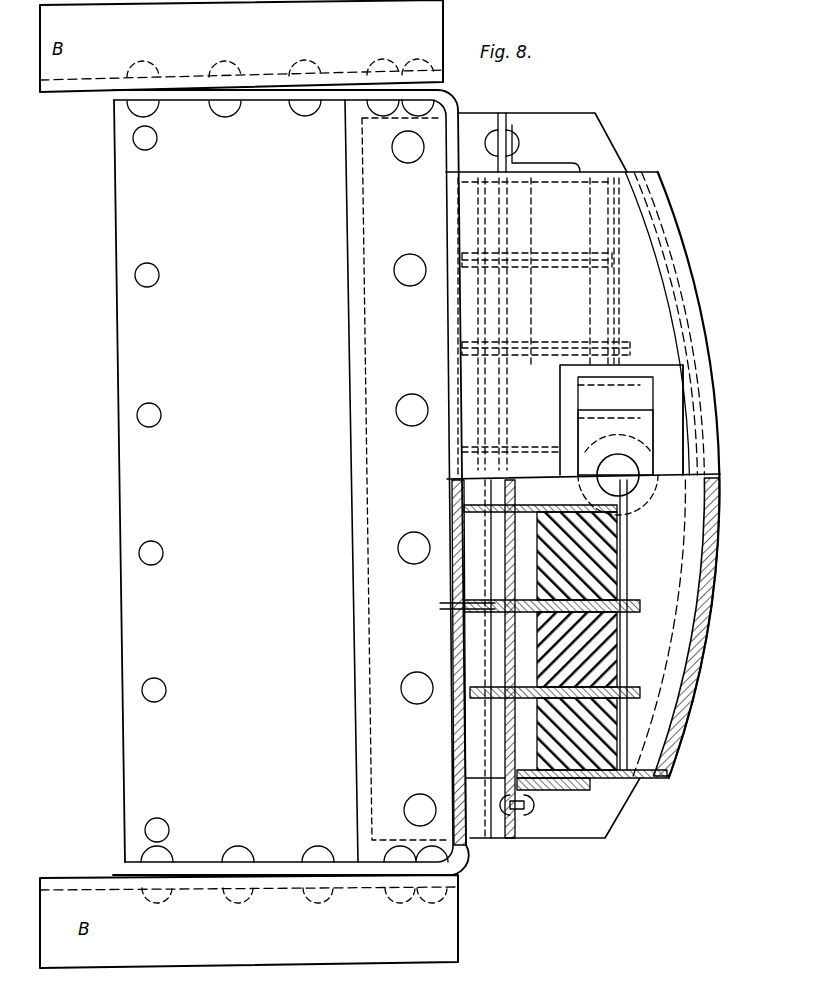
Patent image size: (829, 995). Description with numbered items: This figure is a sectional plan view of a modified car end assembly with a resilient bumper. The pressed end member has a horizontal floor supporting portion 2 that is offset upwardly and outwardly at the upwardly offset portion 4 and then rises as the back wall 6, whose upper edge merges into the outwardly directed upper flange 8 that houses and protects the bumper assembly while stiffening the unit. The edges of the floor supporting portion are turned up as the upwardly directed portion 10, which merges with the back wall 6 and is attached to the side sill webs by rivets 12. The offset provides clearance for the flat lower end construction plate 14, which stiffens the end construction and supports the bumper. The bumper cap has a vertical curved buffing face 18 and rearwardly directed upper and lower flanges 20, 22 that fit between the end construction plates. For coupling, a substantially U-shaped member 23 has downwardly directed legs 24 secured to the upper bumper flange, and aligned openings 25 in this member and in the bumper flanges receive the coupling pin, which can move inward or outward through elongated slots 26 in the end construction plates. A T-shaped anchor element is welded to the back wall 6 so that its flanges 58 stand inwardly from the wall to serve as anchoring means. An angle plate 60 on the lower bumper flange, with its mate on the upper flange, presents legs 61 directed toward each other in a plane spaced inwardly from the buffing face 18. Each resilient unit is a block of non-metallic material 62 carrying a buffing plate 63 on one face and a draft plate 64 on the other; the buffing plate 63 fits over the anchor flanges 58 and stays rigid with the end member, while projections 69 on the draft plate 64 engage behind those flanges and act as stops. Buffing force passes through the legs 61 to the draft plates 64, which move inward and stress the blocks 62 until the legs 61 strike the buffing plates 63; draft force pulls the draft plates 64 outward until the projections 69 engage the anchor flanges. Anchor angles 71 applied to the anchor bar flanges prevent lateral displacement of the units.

The horizontal floor supporting portion 2 is at (167, 481).
The upwardly offset portion 4 is at (378, 468).
The back wall 6 is at (455, 503).
The upper flange 8 is at (652, 303).
The upwardly directed portion 10 is at (274, 96).
The rivets 12 is at (214, 113).
The lower end construction plate 14 is at (597, 138).
The buffing face 18 is at (722, 513).
The upper flange 20 is at (678, 451).
The lower flange 22 is at (667, 772).
The U-shaped member 23 is at (640, 437).
The downwardly directed legs 24 is at (652, 393).
The aligned openings 25 is at (618, 475).
The elongated slots 26 is at (577, 483).
The flanges 58 is at (510, 743).
The angle plate 60 is at (673, 560).
The legs 61 is at (622, 523).
The block of non-metallic material 62 is at (608, 567).
The buffing plate 63 is at (550, 258).
The draft plate 64 is at (575, 178).
The projections 69 is at (492, 797).
The anchor angles 71 is at (515, 165).